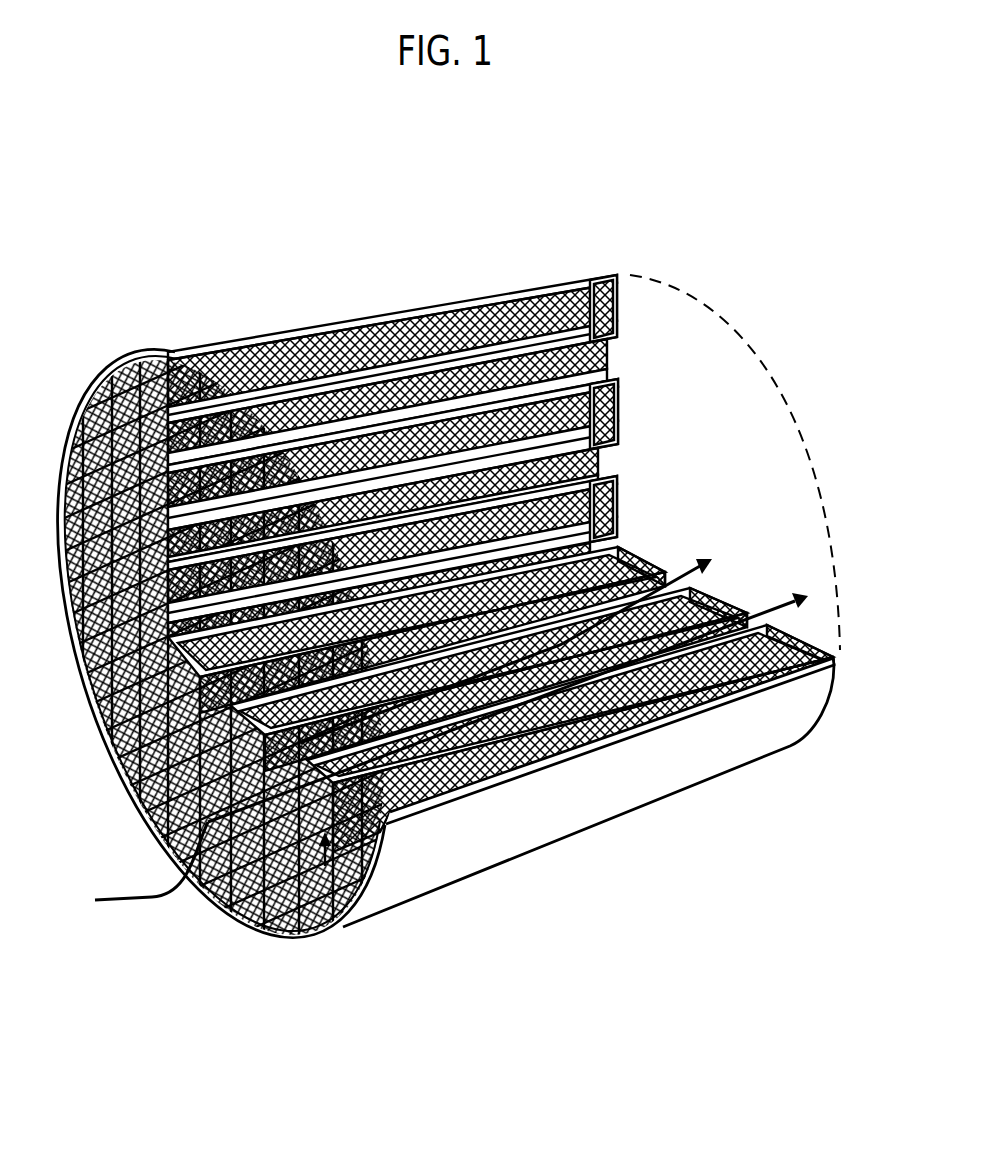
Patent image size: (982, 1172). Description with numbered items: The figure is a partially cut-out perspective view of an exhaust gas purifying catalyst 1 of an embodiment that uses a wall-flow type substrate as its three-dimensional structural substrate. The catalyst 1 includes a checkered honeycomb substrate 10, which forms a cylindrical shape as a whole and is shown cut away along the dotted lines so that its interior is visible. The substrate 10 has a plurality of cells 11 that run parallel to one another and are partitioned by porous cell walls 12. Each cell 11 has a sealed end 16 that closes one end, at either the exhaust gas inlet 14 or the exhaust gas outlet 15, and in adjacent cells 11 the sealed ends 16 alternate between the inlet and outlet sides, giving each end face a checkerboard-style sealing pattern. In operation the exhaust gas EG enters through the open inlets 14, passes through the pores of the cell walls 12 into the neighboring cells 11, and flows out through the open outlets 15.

The exhaust gas purifying catalyst 1 is at (296, 243).
The checkered honeycomb substrate 10 is at (585, 276).
The cells 11 is at (443, 548).
The cell walls 12 is at (638, 650).
The exhaust gas inlet 14 is at (326, 935).
The exhaust gas outlet 15 is at (758, 596).
The sealed end 16 is at (113, 792).
The exhaust gas EG is at (132, 908).